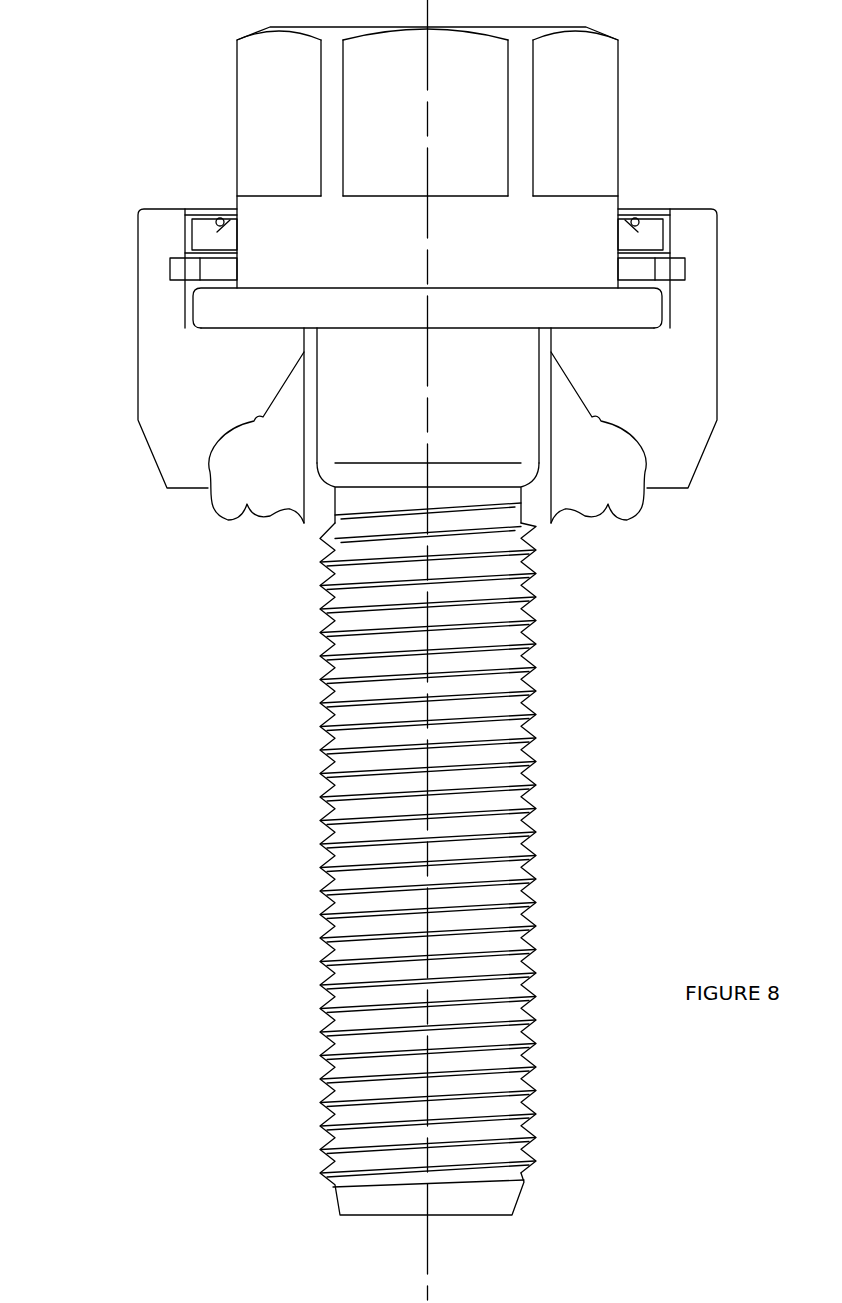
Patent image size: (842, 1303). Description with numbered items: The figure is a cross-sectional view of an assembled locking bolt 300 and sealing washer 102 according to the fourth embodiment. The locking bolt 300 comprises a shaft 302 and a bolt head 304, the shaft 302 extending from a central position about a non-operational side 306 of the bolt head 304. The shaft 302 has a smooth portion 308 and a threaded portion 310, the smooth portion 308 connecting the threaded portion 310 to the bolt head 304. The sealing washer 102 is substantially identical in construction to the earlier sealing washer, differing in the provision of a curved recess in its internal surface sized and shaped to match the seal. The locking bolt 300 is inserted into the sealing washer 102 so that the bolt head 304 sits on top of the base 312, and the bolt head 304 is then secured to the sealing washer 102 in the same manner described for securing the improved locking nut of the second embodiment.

The sealing washer 102 is at (724, 346).
The locking bolt 300 is at (125, 765).
The shaft 302 is at (535, 796).
The bolt head 304 is at (624, 133).
The non-operational side 306 is at (247, 331).
The smooth portion 308 is at (428, 425).
The threaded portion 310 is at (428, 859).
The base 312 is at (613, 331).